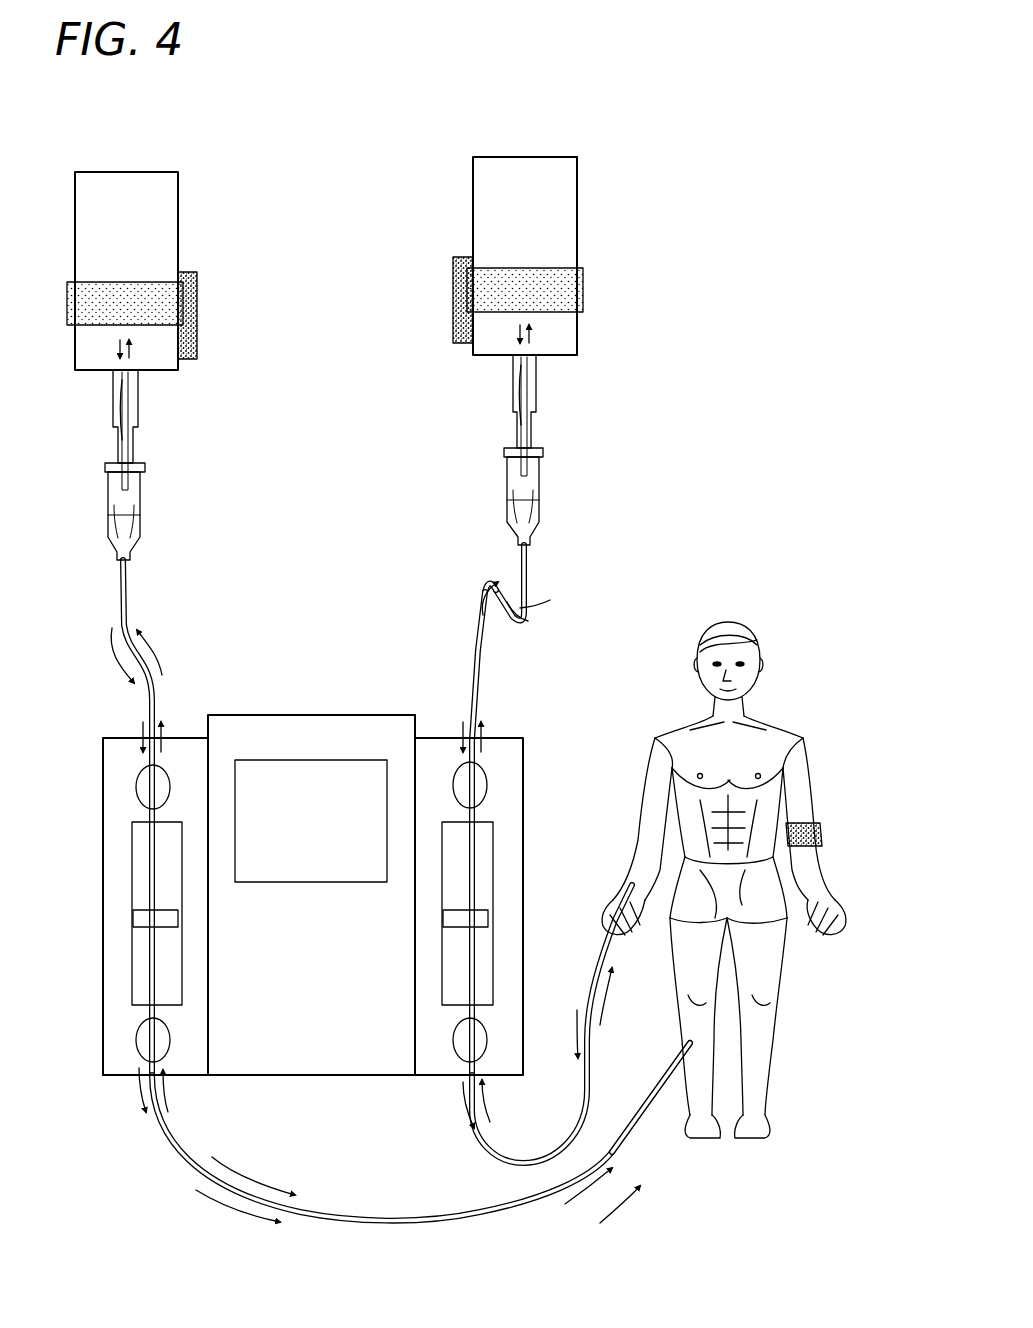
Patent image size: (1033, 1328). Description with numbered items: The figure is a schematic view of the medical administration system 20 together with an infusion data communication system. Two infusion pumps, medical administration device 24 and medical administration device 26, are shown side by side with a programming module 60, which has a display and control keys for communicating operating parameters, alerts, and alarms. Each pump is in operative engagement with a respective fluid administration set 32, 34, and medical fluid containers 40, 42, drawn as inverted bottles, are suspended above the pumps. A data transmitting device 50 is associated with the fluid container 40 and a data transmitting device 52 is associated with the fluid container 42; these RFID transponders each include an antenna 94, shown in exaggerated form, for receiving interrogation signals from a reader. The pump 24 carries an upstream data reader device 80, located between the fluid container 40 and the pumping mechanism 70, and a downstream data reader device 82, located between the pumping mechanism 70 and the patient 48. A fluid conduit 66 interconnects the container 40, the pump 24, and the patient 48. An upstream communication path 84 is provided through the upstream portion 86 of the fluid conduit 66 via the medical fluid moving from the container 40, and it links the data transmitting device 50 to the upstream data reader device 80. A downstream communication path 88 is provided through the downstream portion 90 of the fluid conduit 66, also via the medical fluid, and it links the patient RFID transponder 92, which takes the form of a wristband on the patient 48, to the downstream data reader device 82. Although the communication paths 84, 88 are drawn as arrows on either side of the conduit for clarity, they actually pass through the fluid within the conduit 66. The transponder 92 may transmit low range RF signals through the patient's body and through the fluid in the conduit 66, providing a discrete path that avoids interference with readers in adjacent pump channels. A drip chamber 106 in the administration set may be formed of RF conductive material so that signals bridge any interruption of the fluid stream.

The medical administration system 20 is at (612, 528).
The medical administration device 24 is at (505, 738).
The medical administration device 26 is at (115, 738).
The fluid administration set 32 is at (529, 600).
The fluid administration set 34 is at (133, 598).
The medical fluid container 40 is at (473, 212).
The medical fluid container 42 is at (182, 214).
The patient 48 is at (765, 1060).
The data transmitting device 50 is at (453, 312).
The data transmitting device 52 is at (198, 318).
The programming module 60 is at (298, 715).
The fluid conduit 66 is at (480, 697).
The pumping mechanism 70 is at (494, 864).
The upstream data reader device 80 is at (487, 785).
The downstream data reader device 82 is at (454, 1036).
The upstream communication path 84 is at (485, 578).
The upstream portion 86 is at (532, 620).
The downstream communication path 88 is at (580, 1013).
The downstream portion 90 is at (594, 1079).
The patient RFID transponder 92 is at (816, 830).
The antenna 94 is at (584, 292).
The drip chamber 106 is at (507, 478).